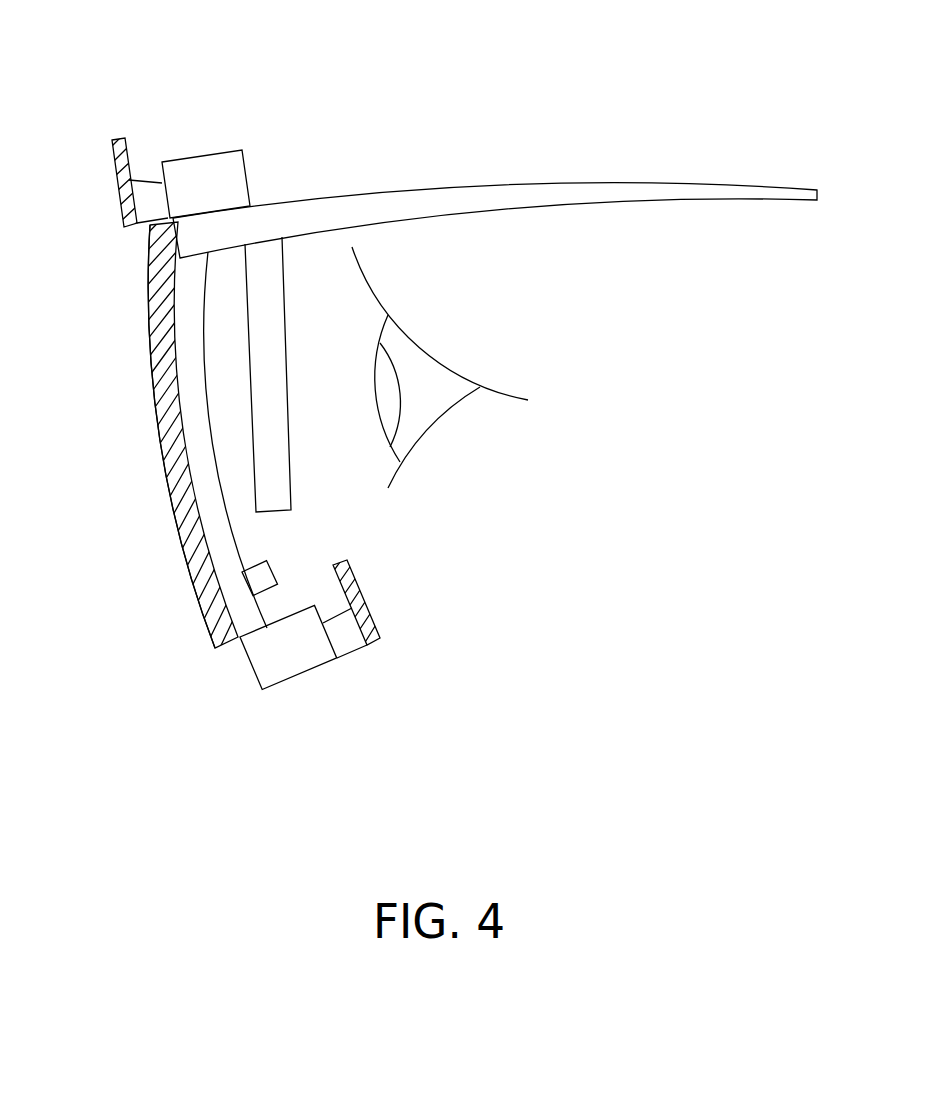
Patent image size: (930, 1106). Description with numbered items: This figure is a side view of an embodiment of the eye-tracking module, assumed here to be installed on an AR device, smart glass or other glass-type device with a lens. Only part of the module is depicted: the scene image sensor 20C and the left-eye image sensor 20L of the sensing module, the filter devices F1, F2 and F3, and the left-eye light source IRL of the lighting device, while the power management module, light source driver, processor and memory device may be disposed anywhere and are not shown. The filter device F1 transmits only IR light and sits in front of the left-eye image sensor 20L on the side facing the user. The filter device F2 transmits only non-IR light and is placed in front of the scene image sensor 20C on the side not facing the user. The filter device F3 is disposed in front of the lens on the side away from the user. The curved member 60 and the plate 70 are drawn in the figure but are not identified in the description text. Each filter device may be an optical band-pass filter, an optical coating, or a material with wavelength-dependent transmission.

The scene image sensor 20C is at (203, 165).
The left-eye image sensor 20L is at (275, 655).
The frame 60 is at (205, 470).
The light guide plate 70 is at (270, 283).
The filter device F1 is at (362, 613).
The filter device F2 is at (123, 184).
The filter device F3 is at (197, 545).
The left-eye light source IRL is at (273, 572).